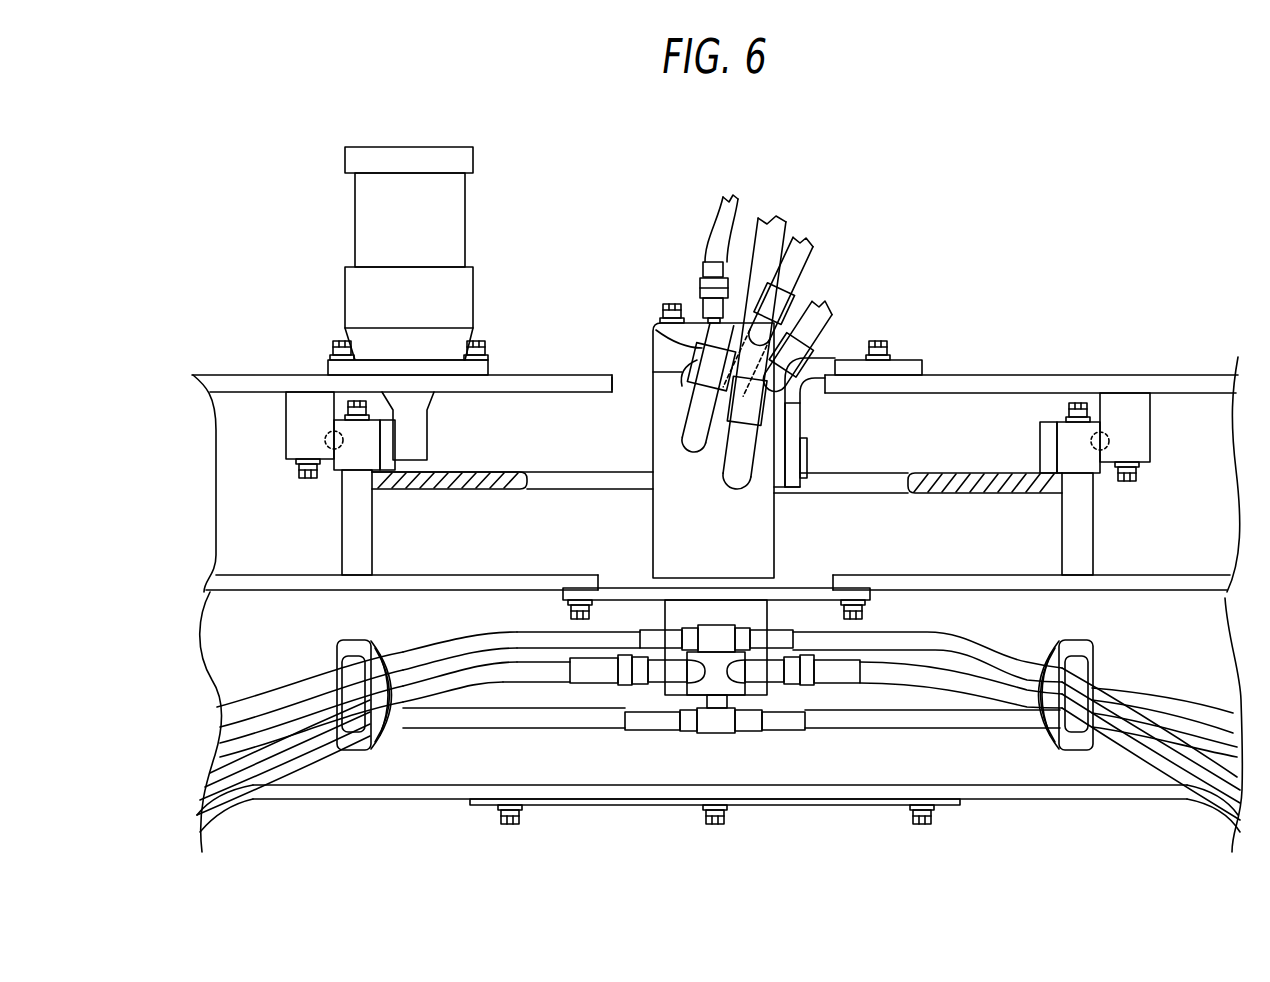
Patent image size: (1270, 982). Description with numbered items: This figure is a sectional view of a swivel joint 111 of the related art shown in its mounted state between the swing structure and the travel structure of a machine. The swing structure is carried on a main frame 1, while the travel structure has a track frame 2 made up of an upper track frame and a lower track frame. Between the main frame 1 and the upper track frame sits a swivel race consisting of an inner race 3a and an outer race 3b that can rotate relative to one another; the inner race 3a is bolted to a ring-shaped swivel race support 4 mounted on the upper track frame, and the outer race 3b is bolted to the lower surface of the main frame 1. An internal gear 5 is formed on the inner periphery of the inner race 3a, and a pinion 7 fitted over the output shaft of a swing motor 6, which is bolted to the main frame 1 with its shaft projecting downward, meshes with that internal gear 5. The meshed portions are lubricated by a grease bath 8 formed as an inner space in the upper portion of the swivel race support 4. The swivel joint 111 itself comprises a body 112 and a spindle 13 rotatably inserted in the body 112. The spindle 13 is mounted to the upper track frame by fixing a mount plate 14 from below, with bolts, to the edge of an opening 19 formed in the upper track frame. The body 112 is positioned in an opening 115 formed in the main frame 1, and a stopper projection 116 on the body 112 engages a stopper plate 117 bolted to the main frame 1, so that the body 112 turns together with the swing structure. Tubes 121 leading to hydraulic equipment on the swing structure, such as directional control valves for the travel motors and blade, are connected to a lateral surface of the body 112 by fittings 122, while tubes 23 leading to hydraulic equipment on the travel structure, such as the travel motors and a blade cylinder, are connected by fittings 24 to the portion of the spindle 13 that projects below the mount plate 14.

The main frame 1 is at (990, 375).
The track frame 2 is at (1187, 576).
The inner race 3a is at (345, 465).
The outer race 3b is at (290, 428).
The swivel race support 4 is at (352, 546).
The internal gear 5 is at (395, 448).
The swing motor 6 is at (357, 228).
The pinion 7 is at (425, 420).
The grease bath 8 is at (513, 472).
The spindle 13 is at (690, 602).
The mount plate 14 is at (870, 597).
The opening 19 is at (600, 578).
The tubes 23 is at (437, 652).
The fittings 24 is at (718, 626).
The swivel joint 111 is at (786, 528).
The body 112 is at (655, 520).
The opening 115 is at (618, 372).
The stopper projection 116 is at (807, 452).
The stopper plate 117 is at (797, 415).
The tubes 121 is at (712, 226).
The fittings 122 is at (703, 288).